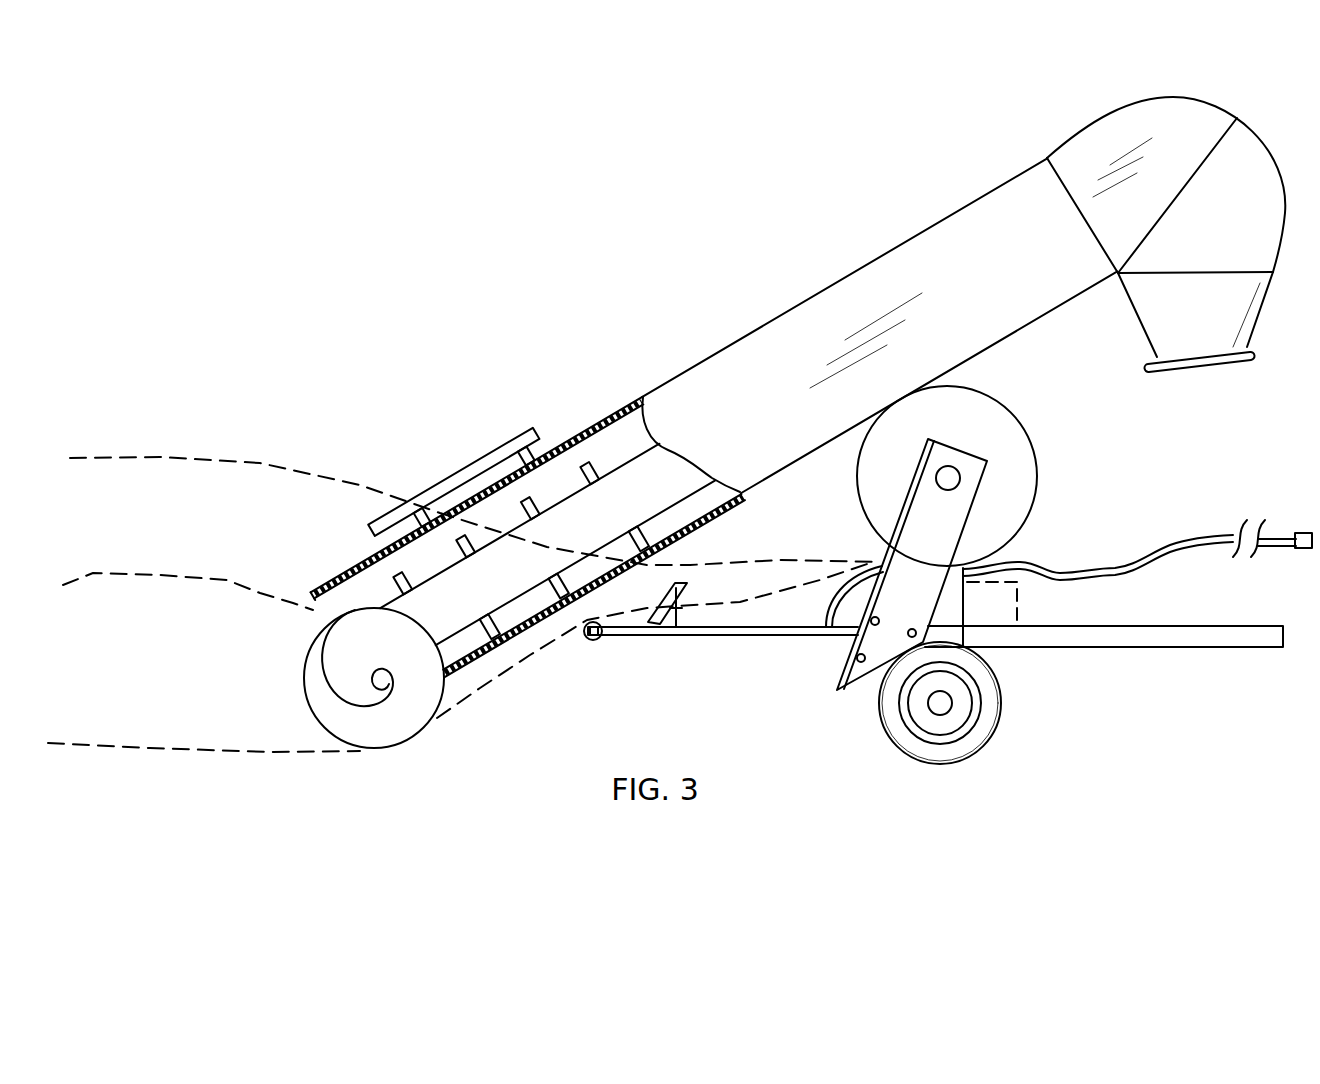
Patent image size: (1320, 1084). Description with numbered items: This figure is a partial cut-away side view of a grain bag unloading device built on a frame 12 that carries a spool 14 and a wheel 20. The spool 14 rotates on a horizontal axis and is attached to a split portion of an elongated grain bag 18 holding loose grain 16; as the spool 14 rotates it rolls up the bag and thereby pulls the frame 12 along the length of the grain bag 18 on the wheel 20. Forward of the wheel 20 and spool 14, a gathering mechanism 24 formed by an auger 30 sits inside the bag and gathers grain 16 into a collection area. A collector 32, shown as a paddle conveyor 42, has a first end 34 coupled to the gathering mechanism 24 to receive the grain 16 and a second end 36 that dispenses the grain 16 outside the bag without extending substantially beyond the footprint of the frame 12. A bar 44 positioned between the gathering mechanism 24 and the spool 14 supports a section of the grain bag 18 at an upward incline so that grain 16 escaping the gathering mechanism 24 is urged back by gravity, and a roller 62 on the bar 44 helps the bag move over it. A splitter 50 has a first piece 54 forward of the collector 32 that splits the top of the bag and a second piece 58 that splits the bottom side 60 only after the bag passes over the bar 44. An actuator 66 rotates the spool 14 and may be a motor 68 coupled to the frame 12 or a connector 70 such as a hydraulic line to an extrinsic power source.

The frame 12 is at (837, 633).
The spool 14 is at (1013, 483).
The grain 16 is at (233, 613).
The grain bag 18 is at (163, 465).
The wheel 20 is at (938, 752).
The gathering mechanism 24 is at (373, 757).
The auger 30 is at (322, 695).
The collector 32 is at (647, 403).
The first end 34 is at (303, 620).
The second end 36 is at (1200, 365).
The paddle conveyor 42 is at (530, 533).
The bar 44 is at (595, 640).
The splitter 50 is at (427, 470).
The first piece 54 is at (368, 500).
The second piece 58 is at (680, 587).
The bottom side 60 is at (517, 673).
The roller 62 is at (605, 650).
The actuator 66 is at (1165, 540).
The motor 68 is at (1008, 597).
The connector 70 is at (1293, 530).